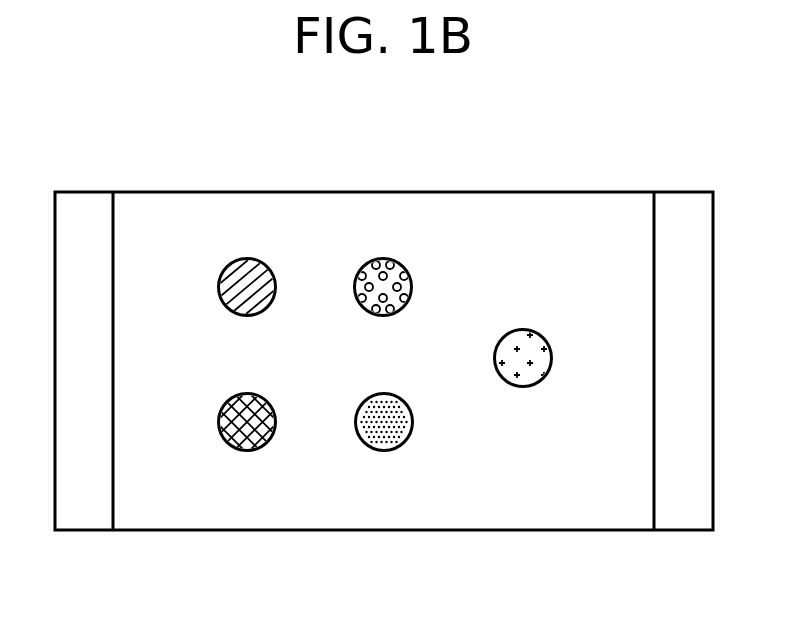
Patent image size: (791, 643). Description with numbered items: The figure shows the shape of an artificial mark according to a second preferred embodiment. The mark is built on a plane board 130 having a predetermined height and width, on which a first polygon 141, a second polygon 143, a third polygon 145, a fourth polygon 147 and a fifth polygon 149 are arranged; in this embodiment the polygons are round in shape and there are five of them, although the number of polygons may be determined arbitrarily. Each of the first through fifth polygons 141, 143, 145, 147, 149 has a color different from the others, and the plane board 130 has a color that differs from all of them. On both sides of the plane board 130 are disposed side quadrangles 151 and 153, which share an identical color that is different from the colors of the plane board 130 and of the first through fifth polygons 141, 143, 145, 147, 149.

The plane board 130 is at (488, 192).
The first polygon 141 is at (247, 257).
The second polygon 143 is at (247, 451).
The third polygon 145 is at (385, 451).
The fourth polygon 147 is at (523, 387).
The fifth polygon 149 is at (384, 257).
The side quadrangle 151 is at (85, 208).
The side quadrangle 153 is at (677, 208).